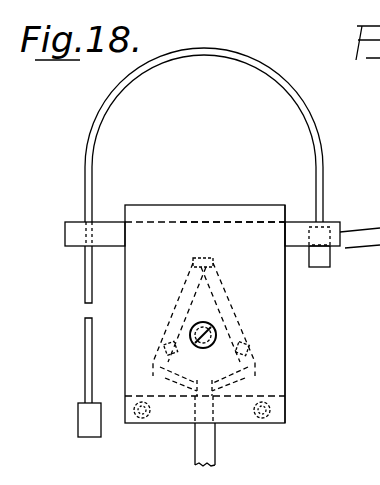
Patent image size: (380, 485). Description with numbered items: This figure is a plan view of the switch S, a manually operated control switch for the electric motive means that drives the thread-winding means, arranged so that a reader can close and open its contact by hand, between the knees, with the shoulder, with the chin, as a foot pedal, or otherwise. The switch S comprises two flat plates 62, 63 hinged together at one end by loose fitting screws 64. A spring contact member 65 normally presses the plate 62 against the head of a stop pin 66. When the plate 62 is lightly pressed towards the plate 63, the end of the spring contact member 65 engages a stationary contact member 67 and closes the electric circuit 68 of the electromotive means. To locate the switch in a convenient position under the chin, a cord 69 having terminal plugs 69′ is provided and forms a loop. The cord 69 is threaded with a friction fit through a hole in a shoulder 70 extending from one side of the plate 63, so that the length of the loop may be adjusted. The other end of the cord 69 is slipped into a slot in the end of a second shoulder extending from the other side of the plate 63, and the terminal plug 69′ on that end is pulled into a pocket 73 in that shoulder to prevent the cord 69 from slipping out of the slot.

The switch S is at (190, 224).
The flat plate 62 is at (285, 296).
The flat plate 63 is at (252, 222).
The loose fitting screws 64 is at (140, 428).
The spring contact member 65 is at (178, 303).
The stop pin 66 is at (205, 322).
The stationary contact member 67 is at (237, 334).
The electric circuit 68 is at (198, 433).
The cord 69 is at (310, 117).
The terminal plug 69′ is at (78, 431).
The shoulder 70 is at (77, 240).
The pocket 73 is at (330, 226).